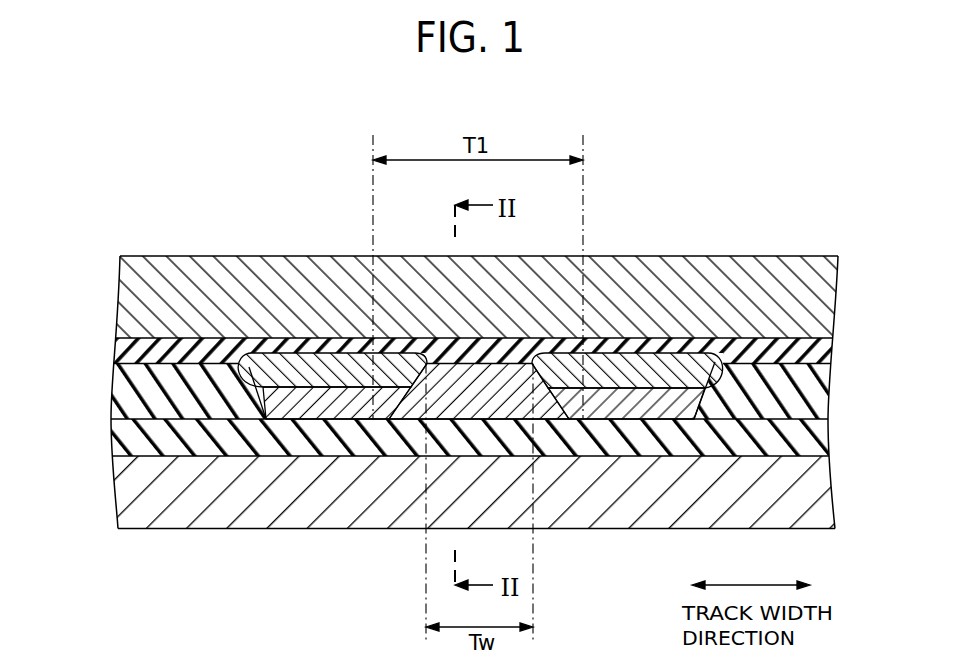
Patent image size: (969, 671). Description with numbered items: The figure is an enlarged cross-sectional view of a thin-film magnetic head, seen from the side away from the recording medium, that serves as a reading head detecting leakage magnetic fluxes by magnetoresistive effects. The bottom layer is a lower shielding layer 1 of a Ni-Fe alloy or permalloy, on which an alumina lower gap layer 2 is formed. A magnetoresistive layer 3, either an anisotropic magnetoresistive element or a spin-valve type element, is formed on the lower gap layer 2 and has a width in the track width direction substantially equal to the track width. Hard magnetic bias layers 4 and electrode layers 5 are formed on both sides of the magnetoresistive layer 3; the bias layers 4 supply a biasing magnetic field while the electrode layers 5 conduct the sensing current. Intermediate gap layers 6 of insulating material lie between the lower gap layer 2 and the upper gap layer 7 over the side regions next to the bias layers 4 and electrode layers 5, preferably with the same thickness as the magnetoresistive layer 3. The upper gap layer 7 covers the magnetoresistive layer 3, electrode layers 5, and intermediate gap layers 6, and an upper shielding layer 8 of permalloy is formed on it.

The lower shielding layer 1 is at (808, 497).
The lower gap layer 2 is at (808, 437).
The magnetoresistive layer 3 is at (452, 395).
The hard magnetic bias layers 4 is at (355, 405).
The electrode layers 5 is at (291, 375).
The intermediate gap layers 6 is at (812, 395).
The upper gap layer 7 is at (812, 355).
The upper shielding layer 8 is at (817, 289).